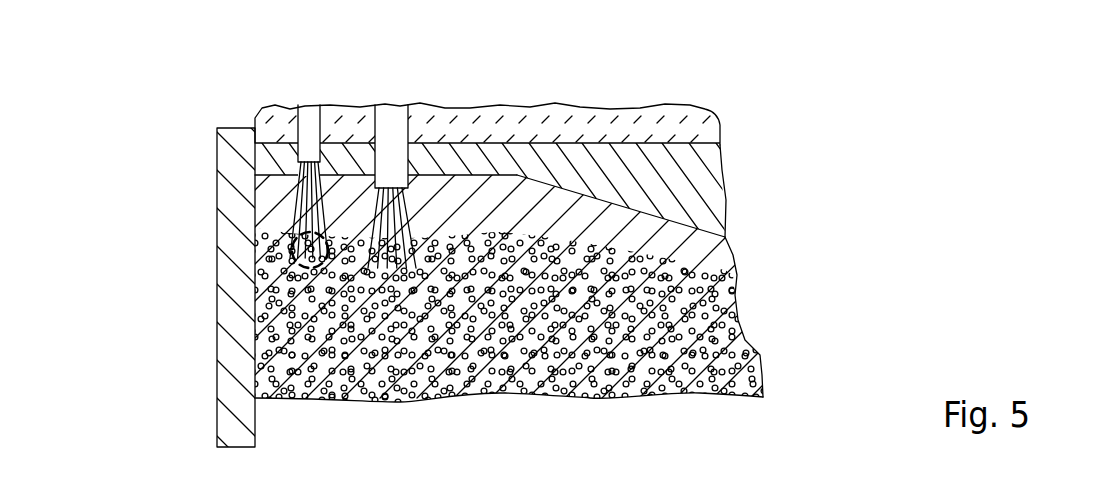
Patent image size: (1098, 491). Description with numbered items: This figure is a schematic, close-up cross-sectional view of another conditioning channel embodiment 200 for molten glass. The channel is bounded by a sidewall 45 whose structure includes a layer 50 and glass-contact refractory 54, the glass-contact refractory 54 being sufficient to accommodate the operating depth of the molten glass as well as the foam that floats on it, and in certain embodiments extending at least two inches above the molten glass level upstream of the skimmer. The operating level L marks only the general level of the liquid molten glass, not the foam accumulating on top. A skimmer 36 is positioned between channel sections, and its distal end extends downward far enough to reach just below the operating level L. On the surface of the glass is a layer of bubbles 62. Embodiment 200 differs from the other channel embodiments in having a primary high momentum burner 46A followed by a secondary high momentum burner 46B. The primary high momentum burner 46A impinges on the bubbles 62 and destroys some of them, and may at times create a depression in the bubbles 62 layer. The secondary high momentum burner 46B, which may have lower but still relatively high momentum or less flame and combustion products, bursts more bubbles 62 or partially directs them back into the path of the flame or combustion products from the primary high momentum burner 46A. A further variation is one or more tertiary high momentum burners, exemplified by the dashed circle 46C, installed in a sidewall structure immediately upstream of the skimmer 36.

The skimmer 36 is at (229, 155).
The sidewall 45 is at (690, 190).
The primary high momentum burner 46A is at (392, 118).
The secondary high momentum burner 46B is at (310, 115).
The tertiary high momentum burner 46C is at (292, 248).
The layer 50 is at (625, 122).
The glass-contact refractory 54 is at (705, 245).
The bubbles 62 is at (730, 352).
The channel embodiment 200 is at (534, 266).
The operating level of molten glass L is at (764, 398).